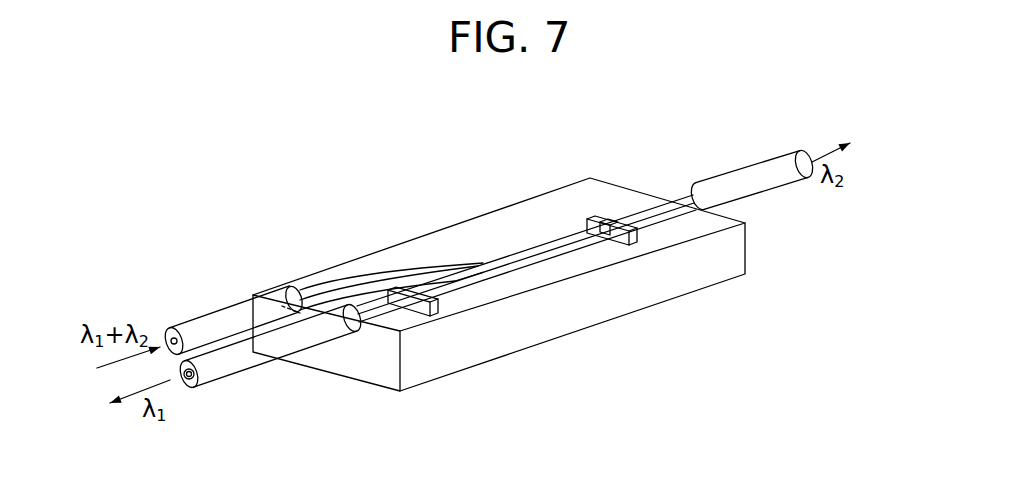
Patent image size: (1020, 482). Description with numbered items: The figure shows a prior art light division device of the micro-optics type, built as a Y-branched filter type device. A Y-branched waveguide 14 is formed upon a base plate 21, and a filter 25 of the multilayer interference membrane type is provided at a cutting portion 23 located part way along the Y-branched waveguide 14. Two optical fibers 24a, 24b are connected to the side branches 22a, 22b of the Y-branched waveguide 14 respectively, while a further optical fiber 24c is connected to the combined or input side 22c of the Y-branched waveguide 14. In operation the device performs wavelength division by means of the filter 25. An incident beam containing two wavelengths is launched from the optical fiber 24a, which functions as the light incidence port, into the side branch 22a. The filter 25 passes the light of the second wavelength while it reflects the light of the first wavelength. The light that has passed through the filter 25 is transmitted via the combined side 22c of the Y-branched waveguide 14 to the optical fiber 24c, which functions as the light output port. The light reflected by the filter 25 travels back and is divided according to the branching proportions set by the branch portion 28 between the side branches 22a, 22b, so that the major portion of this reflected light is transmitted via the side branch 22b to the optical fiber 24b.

The Y-branched waveguide 14 is at (524, 284).
The base plate 21 is at (618, 315).
The side branch 22a is at (315, 291).
The side branch 22b is at (392, 312).
The combined side 22c is at (642, 205).
The cutting portion 23 is at (590, 220).
The optical fiber 24a is at (215, 320).
The optical fiber 24b is at (225, 372).
The optical fiber 24c is at (755, 170).
The filter 25 is at (632, 242).
The branch portion 28 is at (503, 260).